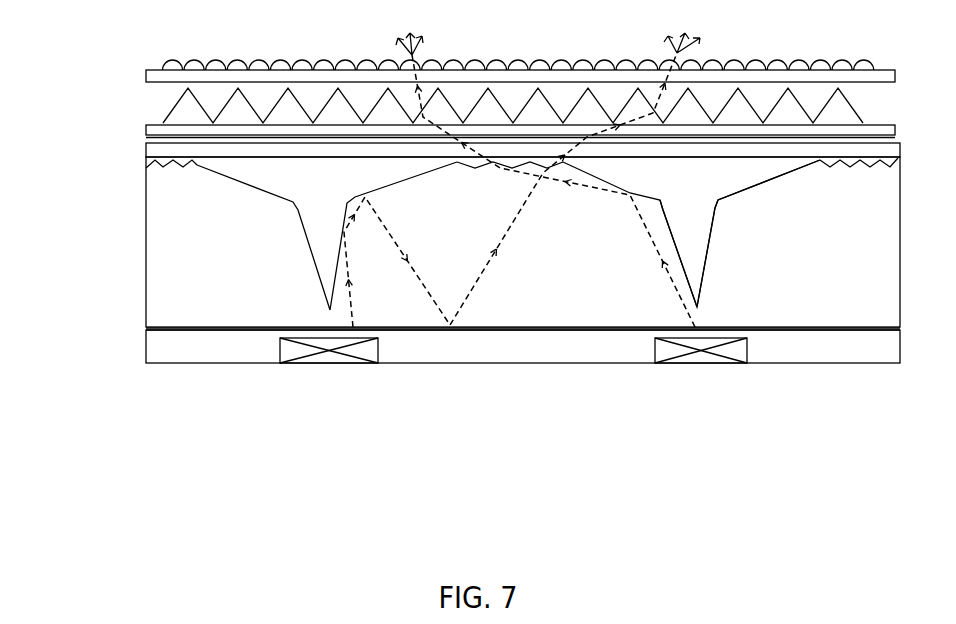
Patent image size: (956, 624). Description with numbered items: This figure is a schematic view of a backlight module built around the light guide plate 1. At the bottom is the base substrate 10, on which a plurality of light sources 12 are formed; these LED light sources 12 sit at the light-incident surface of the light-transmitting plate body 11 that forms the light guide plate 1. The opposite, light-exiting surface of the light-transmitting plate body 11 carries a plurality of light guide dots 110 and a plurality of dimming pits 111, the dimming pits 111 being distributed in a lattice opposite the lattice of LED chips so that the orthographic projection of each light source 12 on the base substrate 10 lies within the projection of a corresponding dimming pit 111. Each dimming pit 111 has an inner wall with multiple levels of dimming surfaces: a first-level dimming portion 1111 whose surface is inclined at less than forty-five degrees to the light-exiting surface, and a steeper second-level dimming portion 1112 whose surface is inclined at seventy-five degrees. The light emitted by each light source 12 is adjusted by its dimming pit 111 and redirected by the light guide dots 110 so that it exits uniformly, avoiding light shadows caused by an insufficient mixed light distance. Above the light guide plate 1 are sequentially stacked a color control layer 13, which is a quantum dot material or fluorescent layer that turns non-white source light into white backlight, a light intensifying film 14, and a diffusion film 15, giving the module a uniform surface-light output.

The light guide plate 1 is at (481, 365).
The base substrate 10 is at (198, 347).
The light-transmitting plate body 11 is at (525, 290).
The light guide dots 110 is at (470, 163).
The dimming pits 111 is at (752, 367).
The first-level dimming portion 1111 is at (780, 183).
The second-level dimming portion 1112 is at (710, 270).
The light source 12 is at (330, 350).
The color control layer 13 is at (146, 148).
The light intensifying film 14 is at (146, 128).
The diffusion film 15 is at (143, 72).